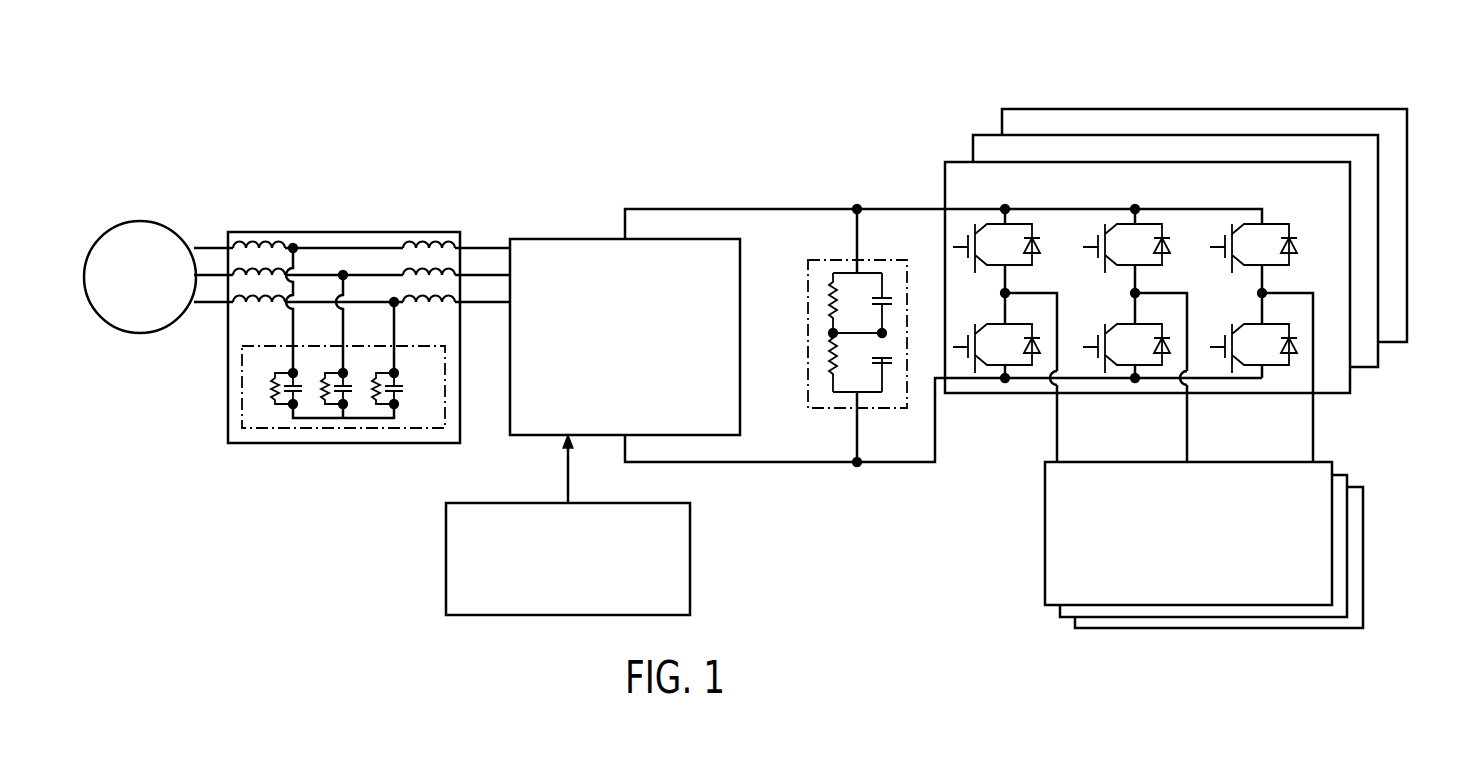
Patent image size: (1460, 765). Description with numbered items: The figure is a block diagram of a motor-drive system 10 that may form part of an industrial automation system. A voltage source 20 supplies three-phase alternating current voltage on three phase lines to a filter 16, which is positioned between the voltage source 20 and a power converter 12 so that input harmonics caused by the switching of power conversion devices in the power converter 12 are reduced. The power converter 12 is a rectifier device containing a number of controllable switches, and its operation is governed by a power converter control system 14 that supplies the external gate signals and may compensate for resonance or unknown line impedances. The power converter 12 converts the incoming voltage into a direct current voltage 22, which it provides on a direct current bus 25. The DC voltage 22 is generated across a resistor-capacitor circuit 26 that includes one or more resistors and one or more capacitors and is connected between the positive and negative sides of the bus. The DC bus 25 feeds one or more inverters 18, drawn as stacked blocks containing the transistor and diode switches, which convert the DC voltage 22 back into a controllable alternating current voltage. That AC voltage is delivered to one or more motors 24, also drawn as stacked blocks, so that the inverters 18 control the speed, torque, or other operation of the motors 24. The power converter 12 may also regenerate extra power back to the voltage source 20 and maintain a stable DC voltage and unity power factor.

The motor-drive system 10 is at (625, 95).
The power converter 12 is at (568, 239).
The power converter control system 14 is at (690, 530).
The filter 16 is at (343, 231).
The inverter 18 is at (1408, 197).
The voltage source 20 is at (118, 222).
The DC voltage 22 is at (777, 275).
The motor 24 is at (1342, 466).
The DC bus 25 is at (838, 195).
The resistor-capacitor (RC) circuit 26 is at (903, 264).